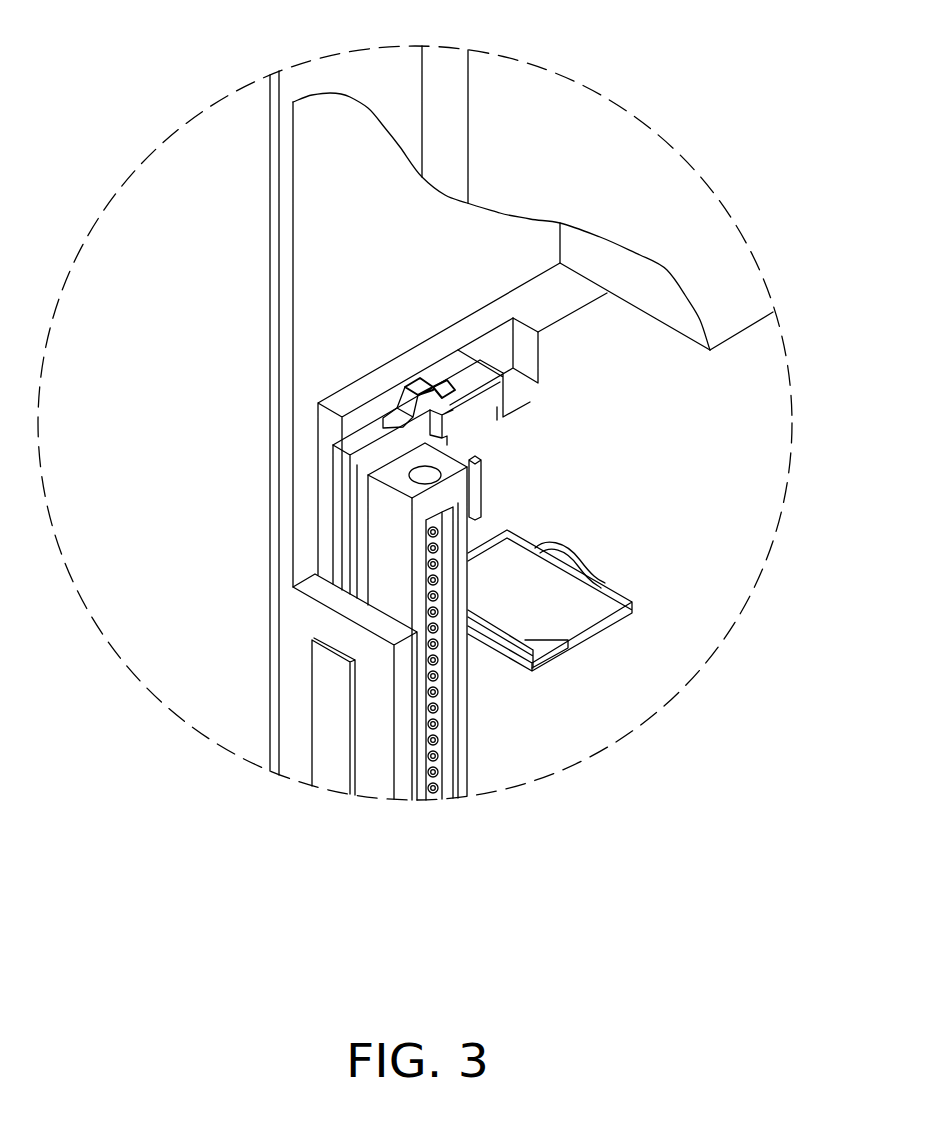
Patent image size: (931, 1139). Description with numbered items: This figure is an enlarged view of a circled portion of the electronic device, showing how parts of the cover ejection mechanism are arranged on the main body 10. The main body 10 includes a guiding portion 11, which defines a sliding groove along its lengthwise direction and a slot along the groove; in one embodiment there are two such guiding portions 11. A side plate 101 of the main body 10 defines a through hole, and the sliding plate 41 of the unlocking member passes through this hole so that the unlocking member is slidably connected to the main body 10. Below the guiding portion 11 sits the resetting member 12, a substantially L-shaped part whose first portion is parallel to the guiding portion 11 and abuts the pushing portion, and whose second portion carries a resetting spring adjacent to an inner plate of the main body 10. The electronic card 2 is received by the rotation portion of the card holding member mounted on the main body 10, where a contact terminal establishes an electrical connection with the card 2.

The main body 10 is at (347, 238).
The resetting member 12 is at (363, 437).
The guiding portion 11 is at (460, 757).
The electronic card 2 is at (587, 613).
The side plate 101 is at (298, 607).
The sliding plate 41 is at (330, 750).